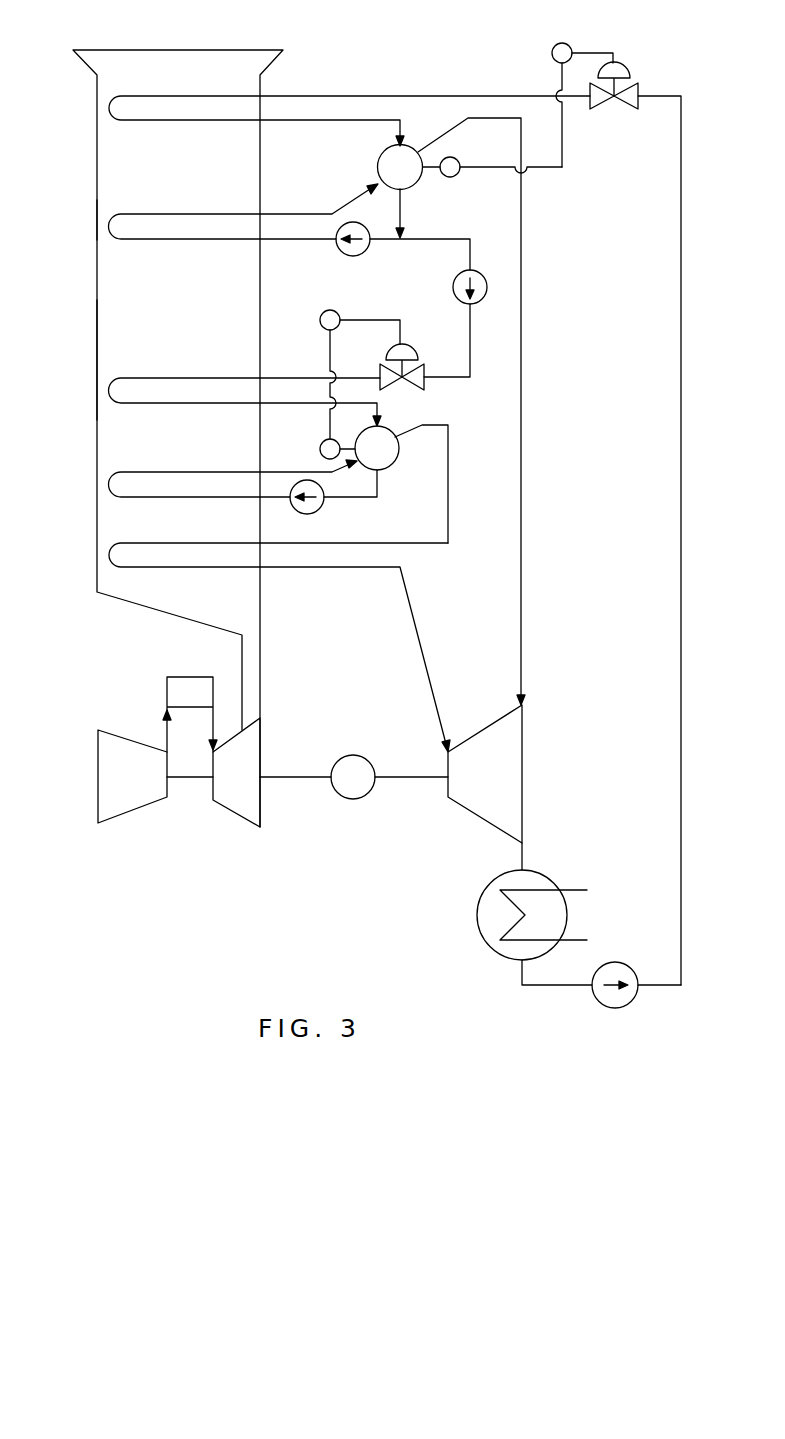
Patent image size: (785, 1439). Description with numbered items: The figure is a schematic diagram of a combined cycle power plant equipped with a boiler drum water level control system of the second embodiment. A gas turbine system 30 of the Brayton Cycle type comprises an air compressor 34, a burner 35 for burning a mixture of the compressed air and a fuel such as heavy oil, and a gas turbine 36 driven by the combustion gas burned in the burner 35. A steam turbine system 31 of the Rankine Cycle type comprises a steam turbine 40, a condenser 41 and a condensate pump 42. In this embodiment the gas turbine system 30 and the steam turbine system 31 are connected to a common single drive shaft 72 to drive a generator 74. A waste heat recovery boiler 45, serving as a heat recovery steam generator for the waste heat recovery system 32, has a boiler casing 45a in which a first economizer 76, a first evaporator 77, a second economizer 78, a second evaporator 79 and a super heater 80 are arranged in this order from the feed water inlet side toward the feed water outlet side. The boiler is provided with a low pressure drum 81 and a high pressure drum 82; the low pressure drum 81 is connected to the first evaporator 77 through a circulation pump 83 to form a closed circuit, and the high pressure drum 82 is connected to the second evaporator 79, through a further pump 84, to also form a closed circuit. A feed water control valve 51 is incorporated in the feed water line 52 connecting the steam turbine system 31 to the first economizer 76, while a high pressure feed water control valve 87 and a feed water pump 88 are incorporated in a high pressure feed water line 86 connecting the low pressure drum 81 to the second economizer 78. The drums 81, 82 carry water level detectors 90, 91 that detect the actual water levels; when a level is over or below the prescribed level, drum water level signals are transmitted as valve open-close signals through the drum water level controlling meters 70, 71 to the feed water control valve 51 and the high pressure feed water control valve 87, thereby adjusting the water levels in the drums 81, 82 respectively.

The gas turbine system 30 is at (189, 830).
The steam turbine system 31 is at (456, 885).
The waste heat recovery system 32 is at (88, 420).
The air compressor 34 is at (130, 815).
The burner 35 is at (167, 690).
The gas turbine 36 is at (230, 813).
The steam turbine 40 is at (465, 812).
The condenser 41 is at (478, 935).
The condensate pump 42 is at (617, 962).
The waste heat recovery boiler 45 is at (88, 328).
The boiler casing 45a is at (97, 219).
The feed water control valve 51 is at (616, 108).
The feed water line 52 is at (681, 362).
The drum water level controlling meter 70 is at (562, 43).
The drum water level controlling meter 71 is at (320, 320).
The common single drive shaft 72 is at (295, 775).
The generator 74 is at (355, 800).
The first economizer 76 is at (145, 122).
The first evaporator 77 is at (150, 215).
The second economizer 78 is at (147, 378).
The second evaporator 79 is at (143, 472).
The super heater 80 is at (180, 567).
The low pressure drum 81 is at (377, 162).
The high pressure drum 82 is at (394, 466).
The circulation pump 83 is at (338, 254).
The circulating pump 84 is at (315, 511).
The high pressure feed water line 86 is at (455, 379).
The high pressure feed water control valve 87 is at (410, 348).
The feed water pump 88 is at (453, 287).
The water level detector 90 is at (450, 177).
The water level detector 91 is at (321, 444).